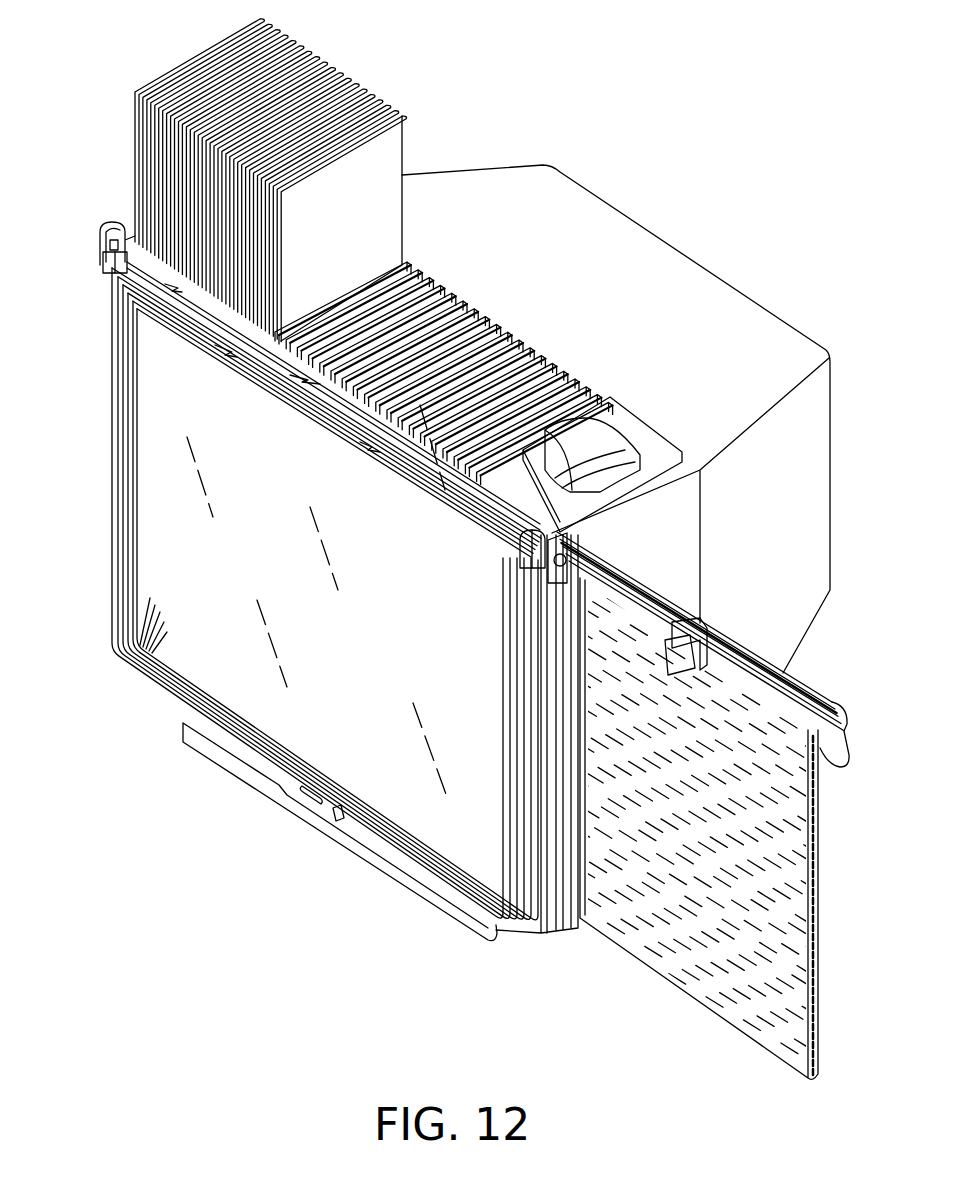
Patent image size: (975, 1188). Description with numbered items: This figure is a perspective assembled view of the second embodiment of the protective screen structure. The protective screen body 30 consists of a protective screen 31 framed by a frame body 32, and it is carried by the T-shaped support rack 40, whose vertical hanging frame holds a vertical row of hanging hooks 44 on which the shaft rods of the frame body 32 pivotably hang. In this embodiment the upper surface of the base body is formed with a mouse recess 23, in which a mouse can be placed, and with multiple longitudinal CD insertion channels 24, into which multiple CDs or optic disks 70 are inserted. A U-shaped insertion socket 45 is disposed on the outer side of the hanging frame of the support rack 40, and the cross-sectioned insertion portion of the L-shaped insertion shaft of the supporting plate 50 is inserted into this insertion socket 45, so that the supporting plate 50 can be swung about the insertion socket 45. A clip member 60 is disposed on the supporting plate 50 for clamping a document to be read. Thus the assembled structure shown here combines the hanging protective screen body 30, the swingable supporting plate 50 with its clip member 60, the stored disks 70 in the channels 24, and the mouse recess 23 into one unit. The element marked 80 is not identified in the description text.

The mouse recess 23 is at (700, 497).
The CD insertion channels 24 is at (503, 328).
The protective screen body 30 is at (175, 722).
The protective screen 31 is at (111, 538).
The frame body 32 is at (183, 660).
The support rack 40 is at (115, 271).
The hanging hooks 44 is at (130, 224).
The U-shaped insertion socket 45 is at (100, 262).
The supporting plate 50 is at (806, 702).
The clip member 60 is at (703, 628).
The CDs or optic disks 70 is at (388, 150).
The lamp cover 80 is at (614, 437).